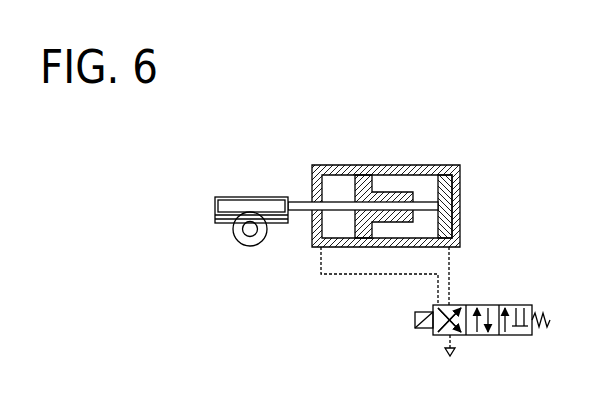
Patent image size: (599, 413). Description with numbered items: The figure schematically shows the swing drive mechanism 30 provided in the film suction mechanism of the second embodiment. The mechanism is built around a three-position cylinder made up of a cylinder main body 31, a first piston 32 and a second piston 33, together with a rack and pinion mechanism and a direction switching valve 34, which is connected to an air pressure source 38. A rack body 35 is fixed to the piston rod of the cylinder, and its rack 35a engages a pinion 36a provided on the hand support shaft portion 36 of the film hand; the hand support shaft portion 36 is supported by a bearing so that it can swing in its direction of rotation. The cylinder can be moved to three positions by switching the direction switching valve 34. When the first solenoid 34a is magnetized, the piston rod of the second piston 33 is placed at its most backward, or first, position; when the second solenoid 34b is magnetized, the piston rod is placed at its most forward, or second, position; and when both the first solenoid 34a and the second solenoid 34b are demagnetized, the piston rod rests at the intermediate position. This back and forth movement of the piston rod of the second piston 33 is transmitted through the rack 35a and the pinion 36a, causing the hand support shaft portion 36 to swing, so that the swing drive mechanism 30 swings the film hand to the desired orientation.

The swing drive mechanism 30 is at (373, 178).
The cylinder main body 31 is at (462, 214).
The first piston 32 is at (352, 165).
The second piston 33 is at (462, 182).
The direction switching valve 34 is at (490, 324).
The first solenoid 34a is at (420, 335).
The second solenoid 34b is at (532, 335).
The rack body 35 is at (215, 200).
The rack 35a is at (215, 217).
The hand support shaft portion 36 is at (240, 241).
The pinion 36a is at (261, 243).
The air pressure source 38 is at (458, 355).